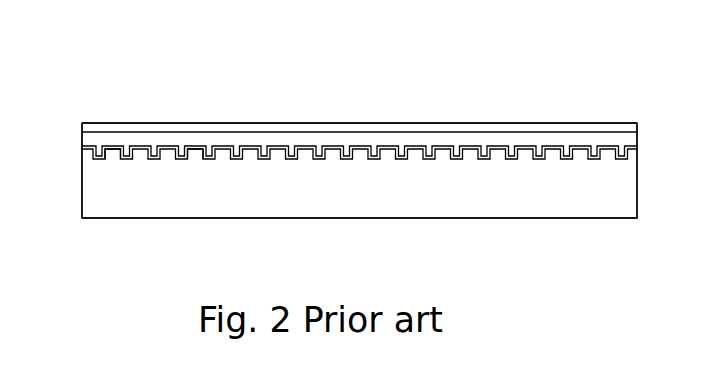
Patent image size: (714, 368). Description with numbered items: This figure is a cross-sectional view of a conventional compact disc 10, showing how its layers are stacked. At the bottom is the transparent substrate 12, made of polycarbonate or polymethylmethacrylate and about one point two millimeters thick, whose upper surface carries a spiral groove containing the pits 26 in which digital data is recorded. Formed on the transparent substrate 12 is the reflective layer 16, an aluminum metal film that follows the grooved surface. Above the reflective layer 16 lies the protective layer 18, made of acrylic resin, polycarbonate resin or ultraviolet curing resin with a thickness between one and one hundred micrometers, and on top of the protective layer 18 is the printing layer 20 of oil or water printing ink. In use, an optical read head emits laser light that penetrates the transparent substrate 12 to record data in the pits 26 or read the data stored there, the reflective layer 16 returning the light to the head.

The compact disc 10 is at (607, 79).
The transparent substrate 12 is at (391, 204).
The reflective layer 16 is at (88, 147).
The protective layer 18 is at (91, 132).
The printing layer 20 is at (503, 122).
The pits 26 is at (141, 156).